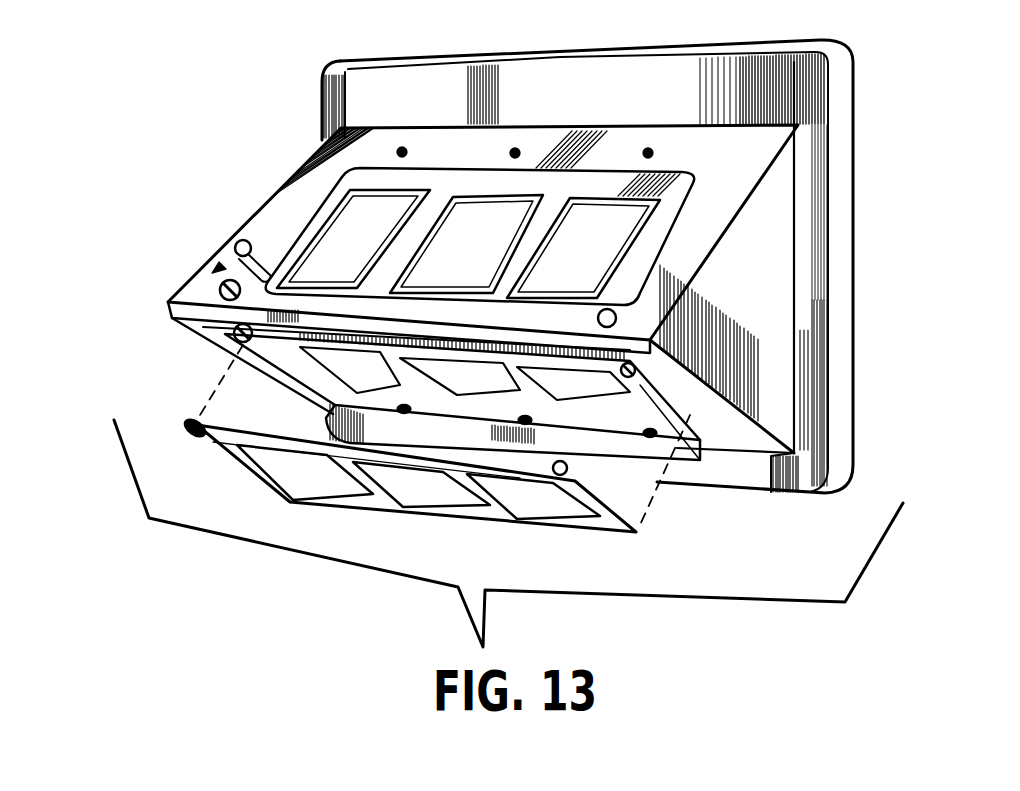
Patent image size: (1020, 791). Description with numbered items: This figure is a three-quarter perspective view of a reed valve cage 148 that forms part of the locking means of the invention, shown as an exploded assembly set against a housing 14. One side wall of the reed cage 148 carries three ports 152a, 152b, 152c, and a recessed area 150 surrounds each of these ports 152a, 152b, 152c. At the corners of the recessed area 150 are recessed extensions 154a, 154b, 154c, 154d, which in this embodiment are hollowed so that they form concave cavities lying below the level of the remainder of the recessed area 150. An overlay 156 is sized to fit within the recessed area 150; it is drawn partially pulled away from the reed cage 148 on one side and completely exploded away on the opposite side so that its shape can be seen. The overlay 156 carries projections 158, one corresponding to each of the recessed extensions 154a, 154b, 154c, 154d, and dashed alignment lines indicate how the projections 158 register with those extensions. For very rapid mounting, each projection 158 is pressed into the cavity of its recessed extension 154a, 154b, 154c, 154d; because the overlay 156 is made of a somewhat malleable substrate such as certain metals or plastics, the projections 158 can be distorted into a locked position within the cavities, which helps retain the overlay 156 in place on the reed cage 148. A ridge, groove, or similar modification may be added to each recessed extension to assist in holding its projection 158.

The housing 14 is at (600, 280).
The reed cage 148 is at (252, 225).
The recessed area 150 is at (680, 225).
The port 152a is at (568, 250).
The port 152b is at (425, 236).
The port 152c is at (350, 199).
The recessed extension 154a is at (670, 311).
The recessed extension 154b is at (214, 293).
The recessed extension 154c is at (234, 333).
The recessed extension 154d is at (673, 443).
The overlay 156 is at (458, 181).
The projection 158 is at (237, 243).